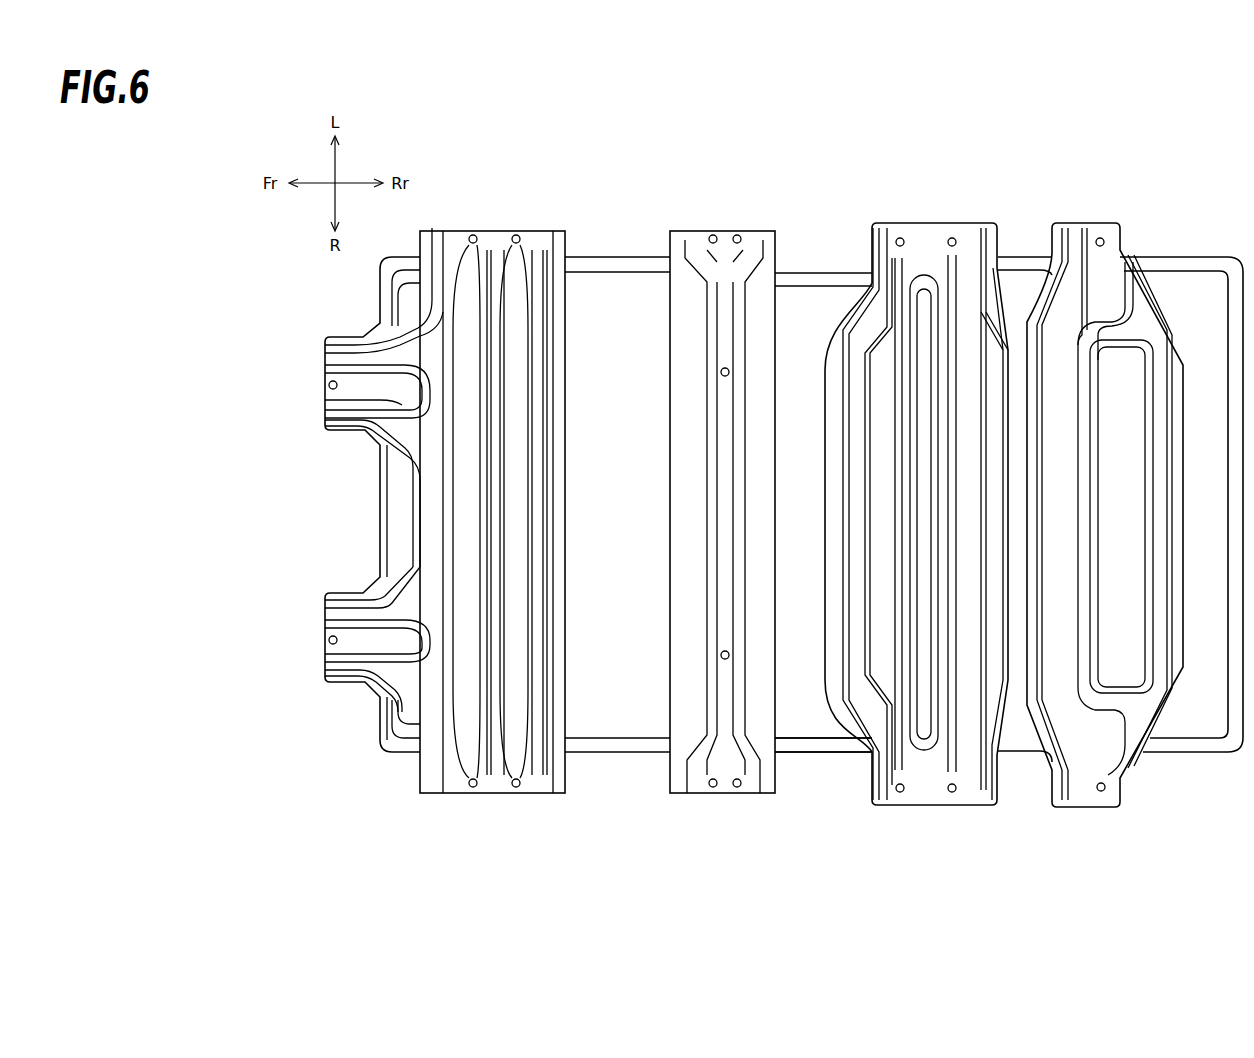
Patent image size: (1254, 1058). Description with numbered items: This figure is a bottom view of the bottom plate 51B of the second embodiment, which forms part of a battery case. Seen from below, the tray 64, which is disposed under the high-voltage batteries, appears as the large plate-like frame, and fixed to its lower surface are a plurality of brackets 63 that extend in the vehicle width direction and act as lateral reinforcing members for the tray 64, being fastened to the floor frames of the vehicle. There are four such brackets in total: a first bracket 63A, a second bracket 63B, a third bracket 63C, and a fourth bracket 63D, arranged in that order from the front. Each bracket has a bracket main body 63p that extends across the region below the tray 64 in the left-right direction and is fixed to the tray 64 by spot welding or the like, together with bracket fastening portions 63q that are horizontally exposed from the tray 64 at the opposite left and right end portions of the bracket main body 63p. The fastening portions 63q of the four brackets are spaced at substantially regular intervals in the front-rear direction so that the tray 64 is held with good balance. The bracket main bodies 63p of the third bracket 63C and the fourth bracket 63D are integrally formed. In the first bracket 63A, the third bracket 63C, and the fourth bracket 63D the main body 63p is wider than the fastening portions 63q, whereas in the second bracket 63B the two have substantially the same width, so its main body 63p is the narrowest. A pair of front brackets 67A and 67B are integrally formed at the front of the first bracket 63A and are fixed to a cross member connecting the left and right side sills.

The bottom plate 51B is at (1203, 210).
The brackets 63 is at (940, 810).
The first bracket 63A is at (547, 232).
The second bracket 63B is at (731, 232).
The third bracket 63C is at (930, 225).
The fourth bracket 63D is at (1104, 225).
The bracket main body 63p is at (687, 633).
The bracket fastening portions 63q is at (537, 795).
The tray 64 is at (817, 717).
The front bracket 67A is at (328, 388).
The front bracket 67B is at (328, 645).